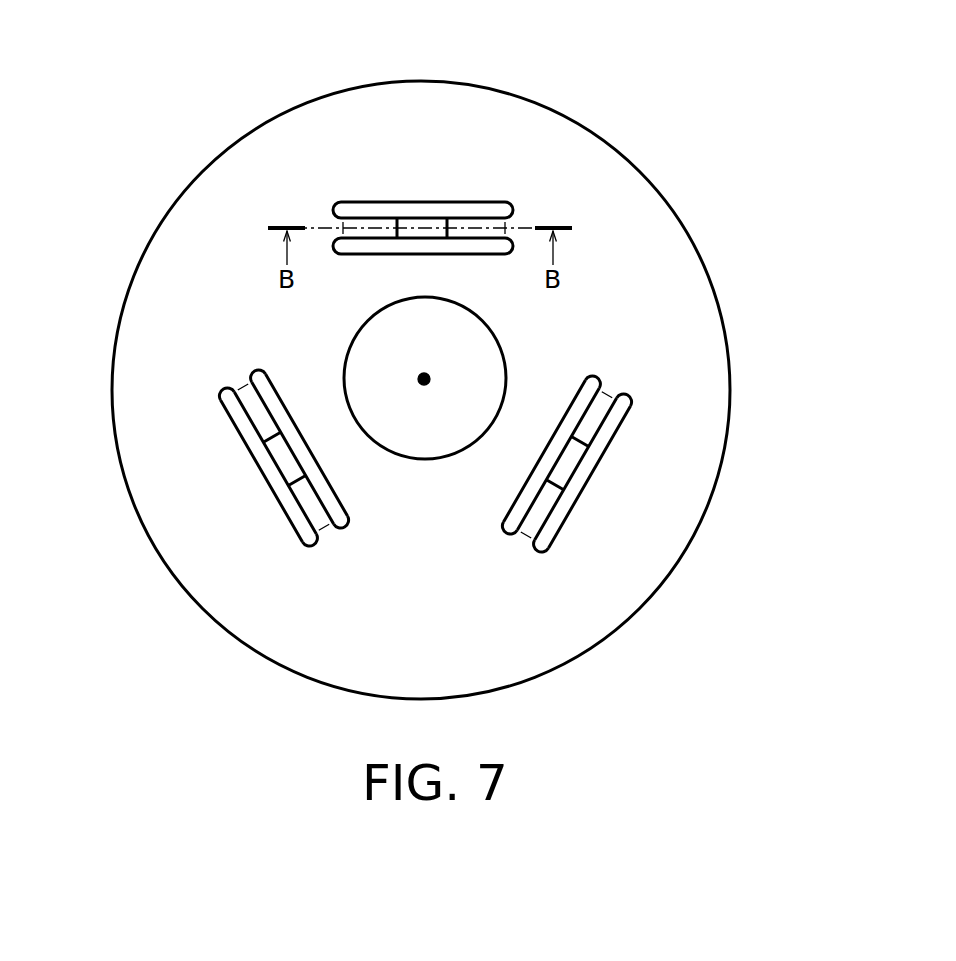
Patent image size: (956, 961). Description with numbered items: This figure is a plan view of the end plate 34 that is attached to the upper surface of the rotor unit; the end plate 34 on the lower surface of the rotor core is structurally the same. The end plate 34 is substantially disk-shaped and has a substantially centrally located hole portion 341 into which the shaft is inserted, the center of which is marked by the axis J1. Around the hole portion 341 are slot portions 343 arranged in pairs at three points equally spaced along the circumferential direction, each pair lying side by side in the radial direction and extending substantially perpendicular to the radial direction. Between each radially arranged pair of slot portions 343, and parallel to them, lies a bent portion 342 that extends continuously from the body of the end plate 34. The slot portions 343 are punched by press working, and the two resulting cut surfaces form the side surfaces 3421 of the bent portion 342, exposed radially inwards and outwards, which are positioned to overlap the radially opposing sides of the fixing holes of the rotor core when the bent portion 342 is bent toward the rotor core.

The end plate 34 is at (102, 84).
The hole portion 341 is at (375, 355).
The bent portion 342 is at (433, 223).
The side surface 3421 is at (482, 252).
The slot portion 343 is at (353, 243).
The rotation axis J1 is at (430, 376).